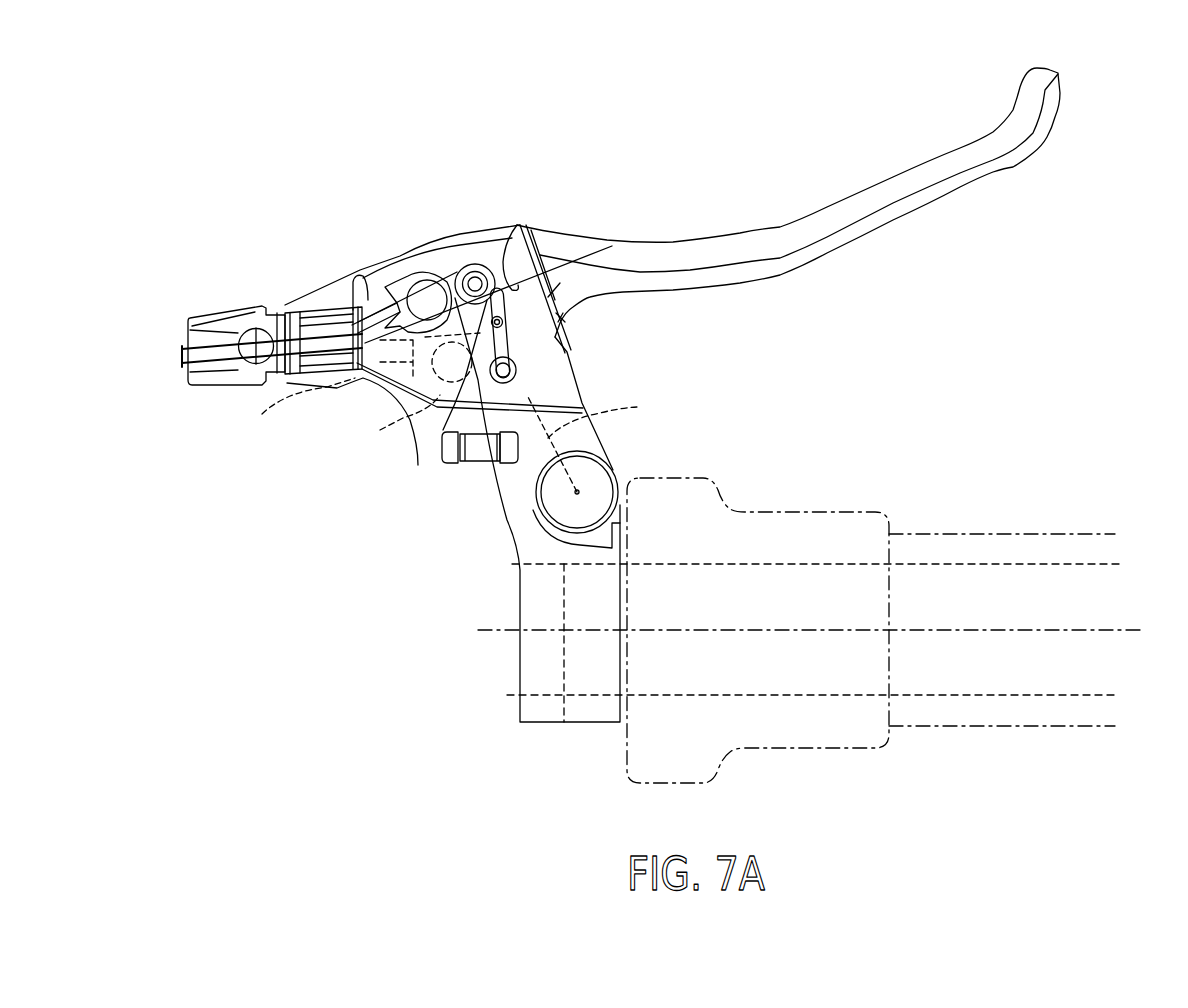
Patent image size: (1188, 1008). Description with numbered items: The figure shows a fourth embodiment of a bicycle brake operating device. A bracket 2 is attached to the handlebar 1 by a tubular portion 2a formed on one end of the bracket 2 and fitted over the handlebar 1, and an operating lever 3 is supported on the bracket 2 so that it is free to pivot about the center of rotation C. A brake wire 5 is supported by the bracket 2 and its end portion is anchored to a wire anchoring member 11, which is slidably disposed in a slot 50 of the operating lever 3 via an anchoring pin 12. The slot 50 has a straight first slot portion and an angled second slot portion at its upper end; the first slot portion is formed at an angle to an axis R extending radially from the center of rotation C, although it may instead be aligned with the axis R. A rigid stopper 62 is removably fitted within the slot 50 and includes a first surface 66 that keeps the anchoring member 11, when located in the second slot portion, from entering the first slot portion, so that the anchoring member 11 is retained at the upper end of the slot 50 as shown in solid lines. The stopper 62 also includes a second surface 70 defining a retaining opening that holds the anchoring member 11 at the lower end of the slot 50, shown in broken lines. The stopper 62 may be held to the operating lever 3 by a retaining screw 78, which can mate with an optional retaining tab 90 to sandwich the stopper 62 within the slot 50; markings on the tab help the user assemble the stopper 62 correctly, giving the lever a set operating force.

The handlebar 1 is at (1022, 545).
The bracket 2 is at (508, 492).
The tubular portion 2a is at (577, 712).
The operating lever 3 is at (778, 232).
The brake wire 5 is at (358, 275).
The wire anchoring member 11 is at (412, 273).
The anchoring pin 12 is at (491, 290).
The slot 50 is at (443, 430).
The stopper 62 is at (523, 227).
The first surface 66 is at (474, 264).
The second surface 70 is at (517, 372).
The retaining screw 78 is at (540, 303).
The retaining tab 90 is at (563, 314).
The center of rotation C is at (580, 490).
The axis R is at (601, 408).